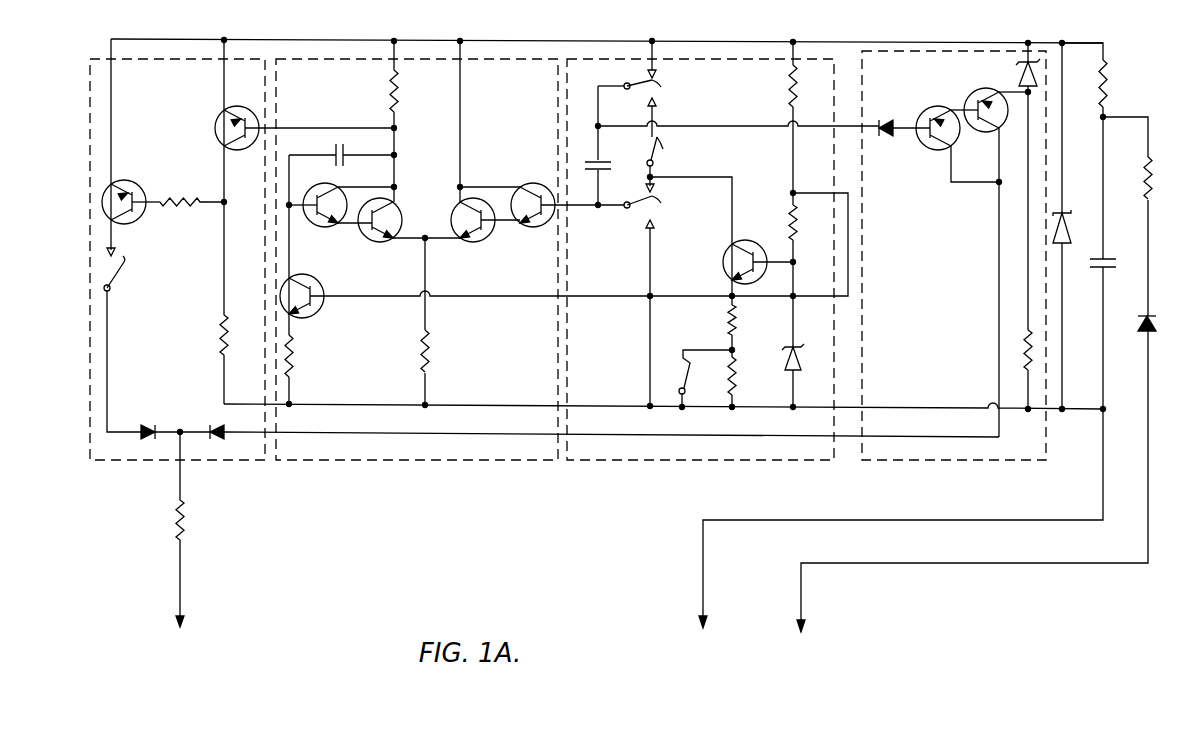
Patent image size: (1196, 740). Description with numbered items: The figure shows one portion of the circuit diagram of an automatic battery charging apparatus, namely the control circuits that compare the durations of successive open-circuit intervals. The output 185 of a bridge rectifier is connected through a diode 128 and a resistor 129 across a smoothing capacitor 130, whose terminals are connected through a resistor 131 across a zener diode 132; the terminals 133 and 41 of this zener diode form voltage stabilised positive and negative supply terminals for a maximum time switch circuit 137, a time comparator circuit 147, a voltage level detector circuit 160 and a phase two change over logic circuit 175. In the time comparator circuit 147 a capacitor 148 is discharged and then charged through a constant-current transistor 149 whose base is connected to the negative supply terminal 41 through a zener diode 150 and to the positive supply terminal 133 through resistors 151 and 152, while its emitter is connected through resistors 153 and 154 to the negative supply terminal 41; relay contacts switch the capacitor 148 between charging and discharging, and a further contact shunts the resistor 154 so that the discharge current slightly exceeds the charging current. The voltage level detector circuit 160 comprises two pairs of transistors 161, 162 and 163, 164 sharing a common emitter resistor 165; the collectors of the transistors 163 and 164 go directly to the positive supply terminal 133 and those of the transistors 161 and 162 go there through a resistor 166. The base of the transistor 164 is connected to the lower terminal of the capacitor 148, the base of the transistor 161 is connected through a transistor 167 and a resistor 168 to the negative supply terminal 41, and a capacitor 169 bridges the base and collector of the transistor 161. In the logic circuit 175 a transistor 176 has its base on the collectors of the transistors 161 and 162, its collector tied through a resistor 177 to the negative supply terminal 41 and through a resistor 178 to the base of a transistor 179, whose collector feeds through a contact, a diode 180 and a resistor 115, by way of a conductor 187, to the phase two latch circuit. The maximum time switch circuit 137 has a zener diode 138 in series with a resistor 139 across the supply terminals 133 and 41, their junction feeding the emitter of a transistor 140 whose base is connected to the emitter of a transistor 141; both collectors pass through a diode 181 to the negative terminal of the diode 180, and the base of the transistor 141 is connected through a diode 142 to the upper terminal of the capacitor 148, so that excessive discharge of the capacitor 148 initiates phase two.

The phase two change over logic circuit 175 is at (171, 44).
The capacitor voltage level detector circuit 160 is at (377, 53).
The time comparator circuit 147 is at (732, 58).
The maximum time switch circuit 137 is at (916, 50).
The positive supply terminal 133 is at (1057, 42).
The resistor 131 is at (1108, 79).
The resistor 129 is at (1152, 157).
The zener diode 138 is at (1020, 73).
The transistor 140 is at (972, 98).
The transistor 141 is at (920, 112).
The diode 142 is at (884, 138).
The zener diode 132 is at (1055, 238).
The smoothing capacitor 130 is at (1088, 263).
The diode 128 is at (1137, 326).
The resistor 139 is at (1021, 349).
The negative supply terminal 41 is at (860, 410).
The output of bridge rectifier 185 is at (808, 623).
The conductor 187 is at (186, 624).
The resistor 115 is at (185, 512).
The diode 180 is at (147, 423).
The diode 181 is at (212, 423).
The resistor 177 is at (221, 333).
The resistor 178 is at (184, 193).
The transistor 179 is at (135, 185).
The transistor 176 is at (217, 121).
The capacitor 169 is at (335, 147).
The resistor 166 is at (388, 92).
The transistor 161 is at (310, 228).
The transistor 162 is at (377, 244).
The transistor 163 is at (471, 243).
The transistor 164 is at (527, 185).
The common emitter resistor 165 is at (432, 343).
The transistor 167 is at (313, 312).
The resistor 168 is at (298, 350).
The capacitor 148 is at (598, 172).
The constant-current transistor 149 is at (724, 262).
The zener diode 150 is at (777, 362).
The resistor 151 is at (786, 213).
The resistor 152 is at (786, 77).
The resistor 153 is at (726, 319).
The resistor 154 is at (736, 382).